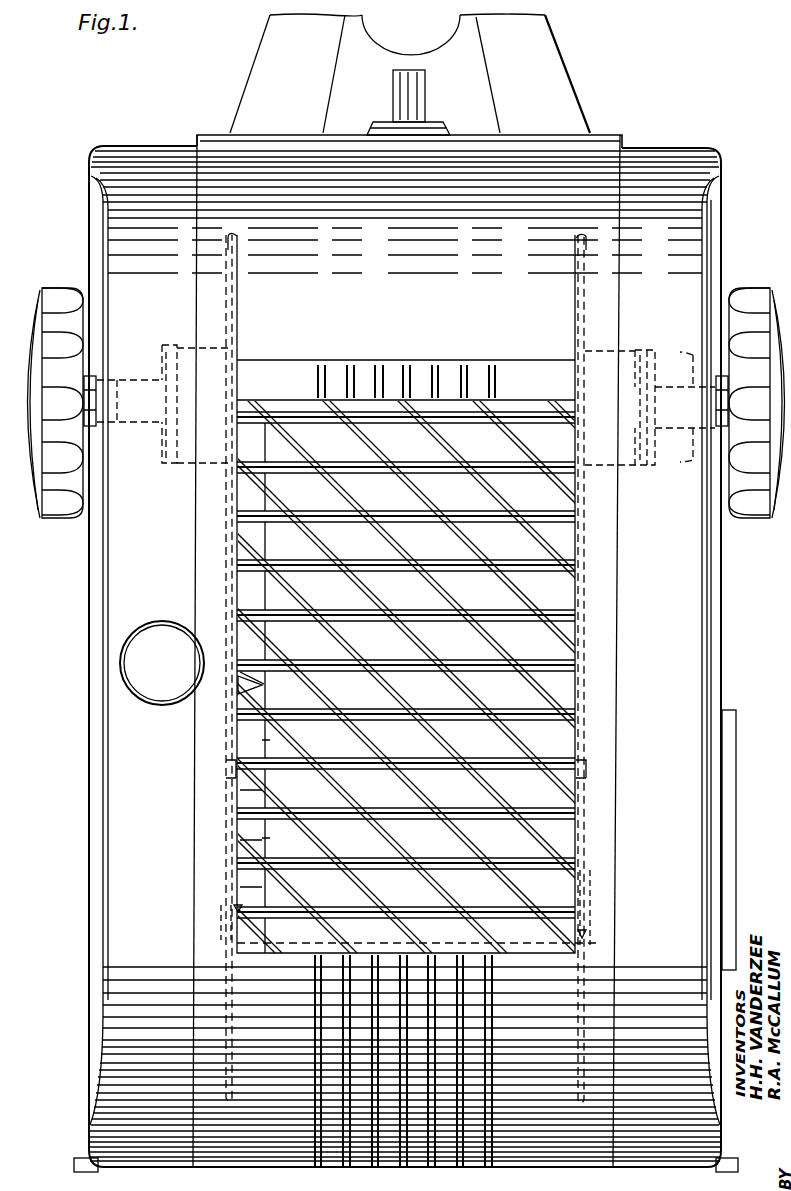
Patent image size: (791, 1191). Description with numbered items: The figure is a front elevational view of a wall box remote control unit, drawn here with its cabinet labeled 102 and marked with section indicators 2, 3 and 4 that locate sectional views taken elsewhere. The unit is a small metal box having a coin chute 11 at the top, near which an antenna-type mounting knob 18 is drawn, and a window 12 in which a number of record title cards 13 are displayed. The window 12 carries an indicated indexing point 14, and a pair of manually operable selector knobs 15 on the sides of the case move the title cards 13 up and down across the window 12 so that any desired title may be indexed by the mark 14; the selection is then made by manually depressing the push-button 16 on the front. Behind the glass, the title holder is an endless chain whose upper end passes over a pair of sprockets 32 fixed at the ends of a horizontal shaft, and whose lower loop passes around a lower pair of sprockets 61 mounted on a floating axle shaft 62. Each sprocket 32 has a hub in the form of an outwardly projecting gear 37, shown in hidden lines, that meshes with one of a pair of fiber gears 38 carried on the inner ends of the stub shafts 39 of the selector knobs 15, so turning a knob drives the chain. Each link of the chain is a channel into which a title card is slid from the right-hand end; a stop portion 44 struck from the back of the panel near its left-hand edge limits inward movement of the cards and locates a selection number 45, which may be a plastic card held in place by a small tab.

The section line 2- 2 is at (134, 1169).
The section line 3- 3 is at (380, 586).
The section line 4- 4 is at (340, 636).
The coin chute 11 is at (455, 36).
The window 12 is at (512, 396).
The record title cards 13 is at (548, 692).
The indexing point 14 is at (268, 686).
The selector knobs 15 is at (54, 514).
The push-button 16 is at (133, 632).
The antenna mounting knob 18 is at (420, 130).
The sprockets 32 is at (238, 316).
The gear 37 is at (178, 345).
The fiber gears 38 is at (175, 465).
The stub shafts 39 is at (150, 428).
The stop portion 44 is at (283, 742).
The selection number 45 is at (240, 887).
The lower sprockets 61 is at (240, 918).
The floating axle shaft 62 is at (240, 900).
The cabinet 102 is at (116, 822).